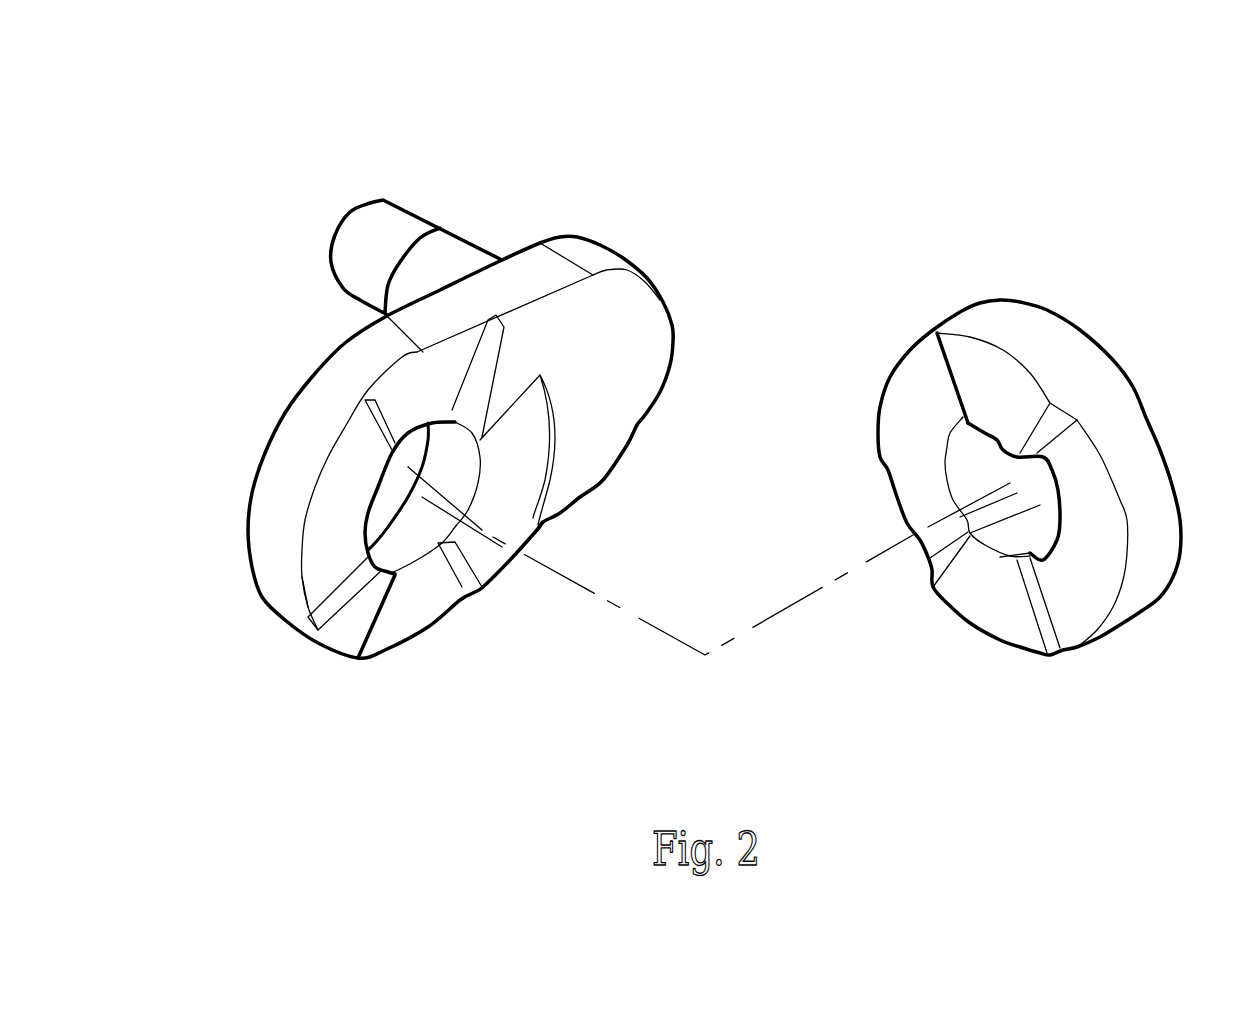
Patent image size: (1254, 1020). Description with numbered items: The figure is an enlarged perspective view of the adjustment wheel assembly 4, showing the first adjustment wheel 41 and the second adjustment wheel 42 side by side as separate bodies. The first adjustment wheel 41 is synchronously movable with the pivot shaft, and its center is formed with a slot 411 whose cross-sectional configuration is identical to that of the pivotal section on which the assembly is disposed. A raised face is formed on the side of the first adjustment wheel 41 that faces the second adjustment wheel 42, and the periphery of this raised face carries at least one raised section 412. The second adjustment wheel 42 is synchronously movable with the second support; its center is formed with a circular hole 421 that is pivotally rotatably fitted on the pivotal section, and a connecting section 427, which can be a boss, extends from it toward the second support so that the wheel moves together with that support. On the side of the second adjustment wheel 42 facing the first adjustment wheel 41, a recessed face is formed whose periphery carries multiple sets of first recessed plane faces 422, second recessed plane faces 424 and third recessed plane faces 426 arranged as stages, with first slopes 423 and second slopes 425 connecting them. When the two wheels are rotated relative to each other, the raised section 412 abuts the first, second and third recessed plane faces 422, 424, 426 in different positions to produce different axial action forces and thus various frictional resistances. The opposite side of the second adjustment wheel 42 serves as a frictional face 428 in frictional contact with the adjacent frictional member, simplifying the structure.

The adjustment wheel assembly 4 is at (1083, 195).
The first adjustment wheel 41 is at (1045, 330).
The slot 411 is at (987, 470).
The raised section 412 is at (973, 397).
The second adjustment wheel 42 is at (597, 256).
The circular hole 421 is at (543, 528).
The first recessed plane faces 422 is at (417, 407).
The first slopes 423 is at (365, 433).
The second recessed plane faces 424 is at (335, 517).
The second slopes 425 is at (497, 430).
The third recessed plane faces 426 is at (500, 393).
The connecting section 427 is at (393, 223).
The frictional face 428 is at (252, 467).